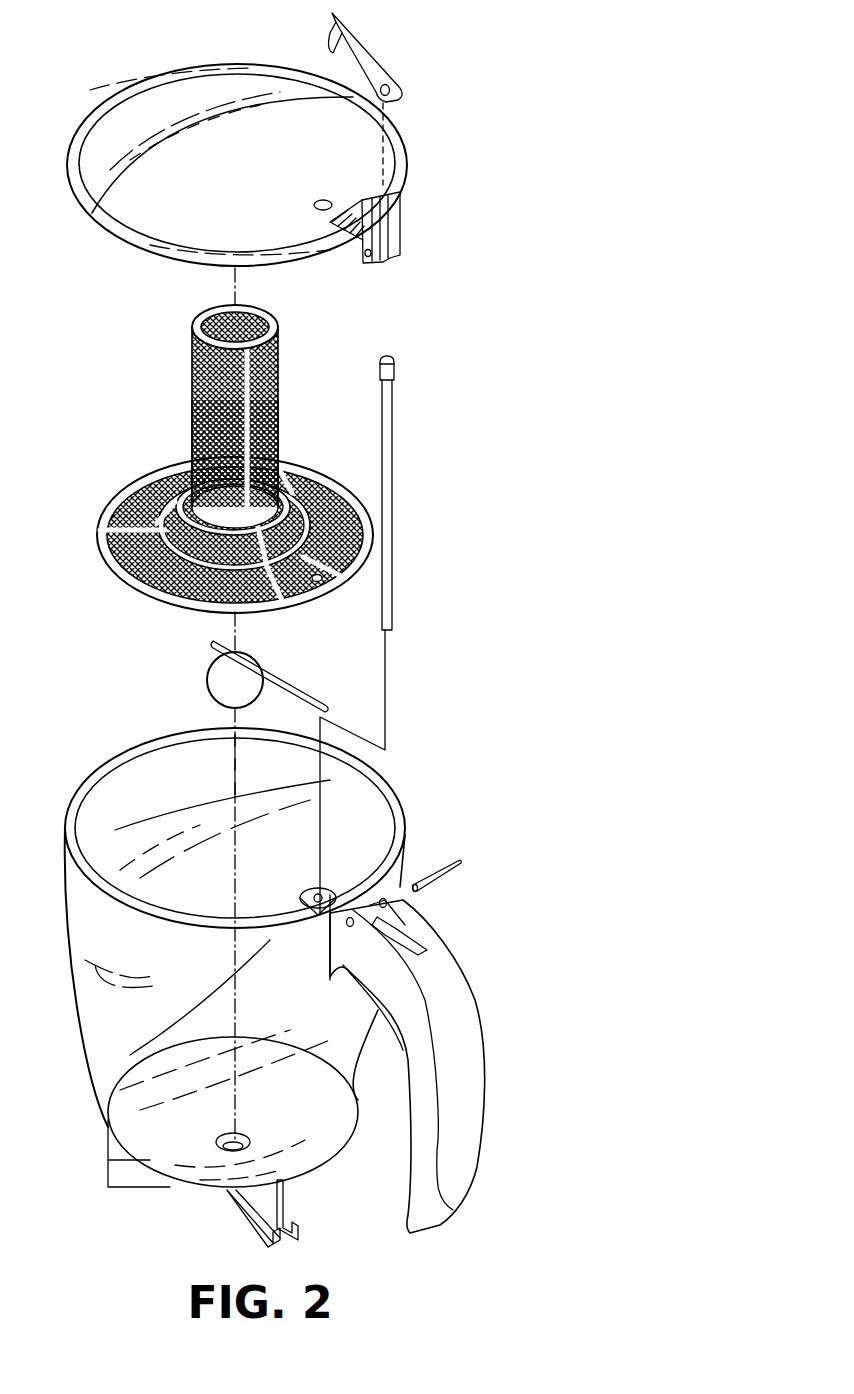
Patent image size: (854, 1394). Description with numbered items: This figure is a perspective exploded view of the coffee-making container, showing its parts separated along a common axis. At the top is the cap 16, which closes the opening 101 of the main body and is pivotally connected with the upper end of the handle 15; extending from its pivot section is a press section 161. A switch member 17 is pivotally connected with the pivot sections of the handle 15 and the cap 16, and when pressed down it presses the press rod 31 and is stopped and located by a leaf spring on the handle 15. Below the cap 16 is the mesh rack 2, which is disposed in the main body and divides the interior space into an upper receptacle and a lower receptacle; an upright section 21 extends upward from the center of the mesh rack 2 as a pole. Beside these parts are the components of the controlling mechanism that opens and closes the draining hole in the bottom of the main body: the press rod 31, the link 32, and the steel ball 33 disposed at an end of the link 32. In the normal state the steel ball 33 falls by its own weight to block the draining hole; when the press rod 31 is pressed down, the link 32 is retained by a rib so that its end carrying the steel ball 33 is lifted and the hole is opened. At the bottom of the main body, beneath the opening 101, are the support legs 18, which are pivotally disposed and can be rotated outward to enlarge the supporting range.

The mesh rack 2 is at (345, 490).
The handle 15 is at (453, 1033).
The cap 16 is at (390, 162).
The press section 161 is at (400, 230).
The switch member 17 is at (382, 67).
The support legs 18 is at (232, 1200).
The upright section 21 is at (272, 426).
The press rod 31 is at (393, 555).
The link 32 is at (297, 683).
The steel ball 33 is at (220, 680).
The opening 101 is at (112, 787).